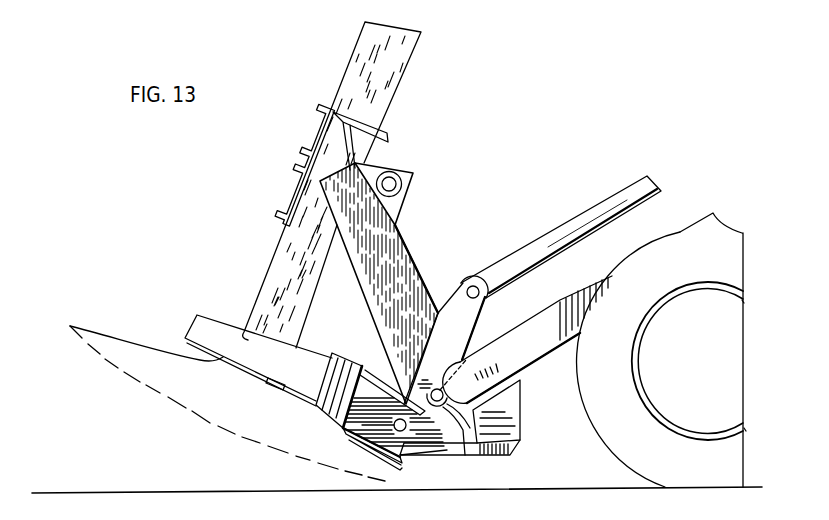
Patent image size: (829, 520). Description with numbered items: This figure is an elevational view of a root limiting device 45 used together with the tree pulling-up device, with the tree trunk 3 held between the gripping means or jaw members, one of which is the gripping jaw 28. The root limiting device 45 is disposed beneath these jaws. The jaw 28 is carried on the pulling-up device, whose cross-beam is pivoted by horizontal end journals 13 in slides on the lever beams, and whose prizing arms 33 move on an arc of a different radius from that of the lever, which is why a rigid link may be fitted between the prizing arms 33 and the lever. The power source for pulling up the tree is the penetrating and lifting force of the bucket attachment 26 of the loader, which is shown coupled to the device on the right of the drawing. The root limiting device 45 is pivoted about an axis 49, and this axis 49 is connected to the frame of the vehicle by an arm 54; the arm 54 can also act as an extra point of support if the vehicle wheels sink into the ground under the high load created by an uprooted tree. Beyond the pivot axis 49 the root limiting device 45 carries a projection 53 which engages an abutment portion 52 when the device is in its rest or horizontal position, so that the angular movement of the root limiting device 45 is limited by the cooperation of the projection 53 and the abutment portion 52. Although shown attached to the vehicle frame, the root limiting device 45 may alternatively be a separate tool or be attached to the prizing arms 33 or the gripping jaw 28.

The post 3 is at (346, 76).
The gripping jaw member 28 is at (290, 200).
The horizontal end journal 13 is at (402, 187).
The prizing arm 33 is at (373, 305).
The bucket attachment 26 is at (472, 330).
The root limiting device 45 is at (320, 345).
The pivot axis 49 is at (350, 440).
The projection 53 is at (450, 455).
The abutment portion 52 is at (468, 455).
The arm 54 is at (483, 455).